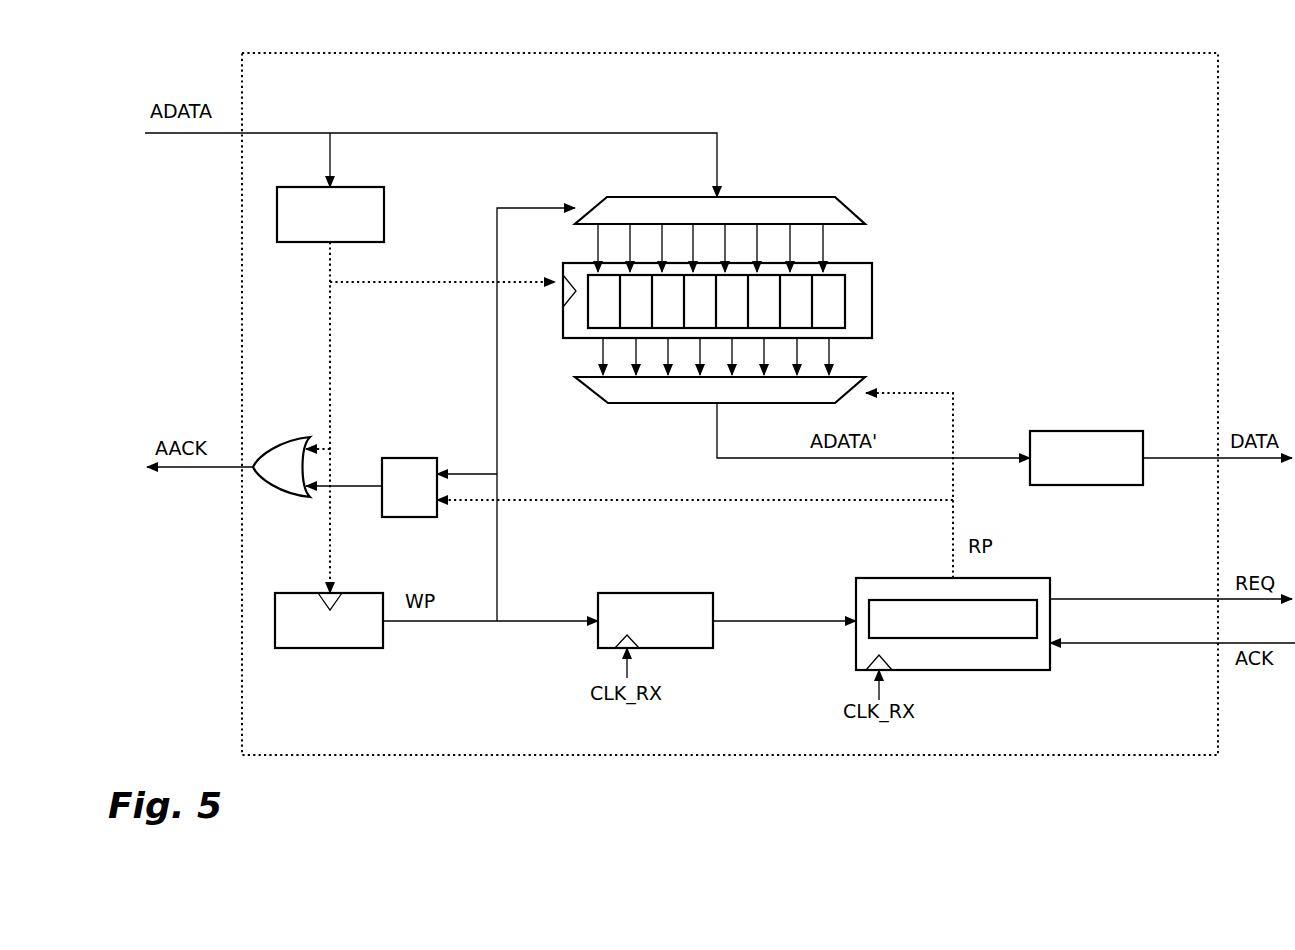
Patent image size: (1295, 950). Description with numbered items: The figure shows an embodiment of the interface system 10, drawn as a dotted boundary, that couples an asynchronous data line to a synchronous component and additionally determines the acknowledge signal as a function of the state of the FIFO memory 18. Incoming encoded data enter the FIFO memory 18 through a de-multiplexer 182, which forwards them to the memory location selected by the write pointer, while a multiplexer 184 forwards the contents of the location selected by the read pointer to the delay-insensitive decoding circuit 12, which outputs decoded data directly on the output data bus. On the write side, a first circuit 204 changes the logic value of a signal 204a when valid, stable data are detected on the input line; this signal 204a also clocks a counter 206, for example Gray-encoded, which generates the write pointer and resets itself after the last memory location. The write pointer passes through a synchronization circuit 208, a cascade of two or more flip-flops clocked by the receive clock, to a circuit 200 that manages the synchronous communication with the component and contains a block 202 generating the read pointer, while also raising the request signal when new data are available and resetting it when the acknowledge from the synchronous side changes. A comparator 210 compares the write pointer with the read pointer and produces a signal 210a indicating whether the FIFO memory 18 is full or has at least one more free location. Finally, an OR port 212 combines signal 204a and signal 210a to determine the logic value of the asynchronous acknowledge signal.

The interface system 10 is at (846, 50).
The delay-insensitive decoding circuit 12 is at (1110, 442).
The FIFO memory 18 is at (873, 302).
The de-multiplexer 182 is at (600, 198).
The multiplexer 184 is at (612, 404).
The synchronous communication management circuit 200 is at (1018, 590).
The read pointer generation block 202 is at (913, 608).
The first circuit 204 is at (375, 195).
The valid-data signal 204a is at (338, 348).
The counter 206 is at (303, 648).
The synchronization circuit 208 is at (620, 605).
The comparator 210 is at (415, 468).
The FIFO-state signal 210a is at (347, 492).
The OR port 212 is at (286, 458).